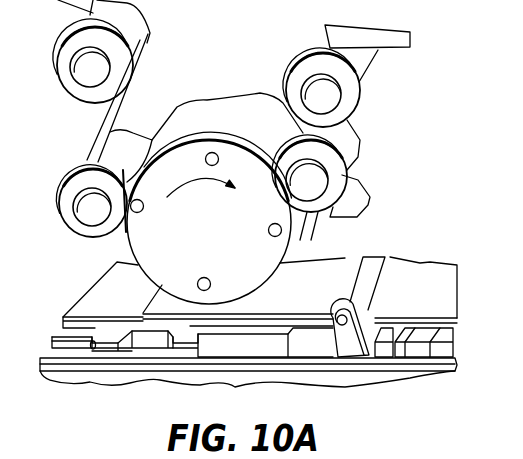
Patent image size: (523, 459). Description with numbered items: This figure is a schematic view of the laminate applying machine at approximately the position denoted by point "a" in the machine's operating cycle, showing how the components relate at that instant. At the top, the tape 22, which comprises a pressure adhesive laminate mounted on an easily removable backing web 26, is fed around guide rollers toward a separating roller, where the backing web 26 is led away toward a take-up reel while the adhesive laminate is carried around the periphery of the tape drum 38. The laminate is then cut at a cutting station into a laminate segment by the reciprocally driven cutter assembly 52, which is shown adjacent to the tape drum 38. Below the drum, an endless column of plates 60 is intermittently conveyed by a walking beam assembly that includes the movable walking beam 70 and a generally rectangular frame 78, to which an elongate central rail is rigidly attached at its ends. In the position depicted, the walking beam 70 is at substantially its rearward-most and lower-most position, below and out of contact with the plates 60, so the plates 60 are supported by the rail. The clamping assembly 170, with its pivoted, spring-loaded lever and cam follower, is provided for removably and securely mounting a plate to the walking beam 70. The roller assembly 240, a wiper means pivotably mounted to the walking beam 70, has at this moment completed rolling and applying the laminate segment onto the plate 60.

The tape 22 is at (233, 103).
The backing web 26 is at (397, 50).
The tape drum 38 is at (132, 250).
The cutter assembly 52 is at (378, 208).
The plates 60 is at (318, 302).
The walking beam 70 is at (83, 330).
The frame 78 is at (160, 372).
The clamping assembly 170 is at (422, 308).
The roller assembly 240 is at (352, 348).